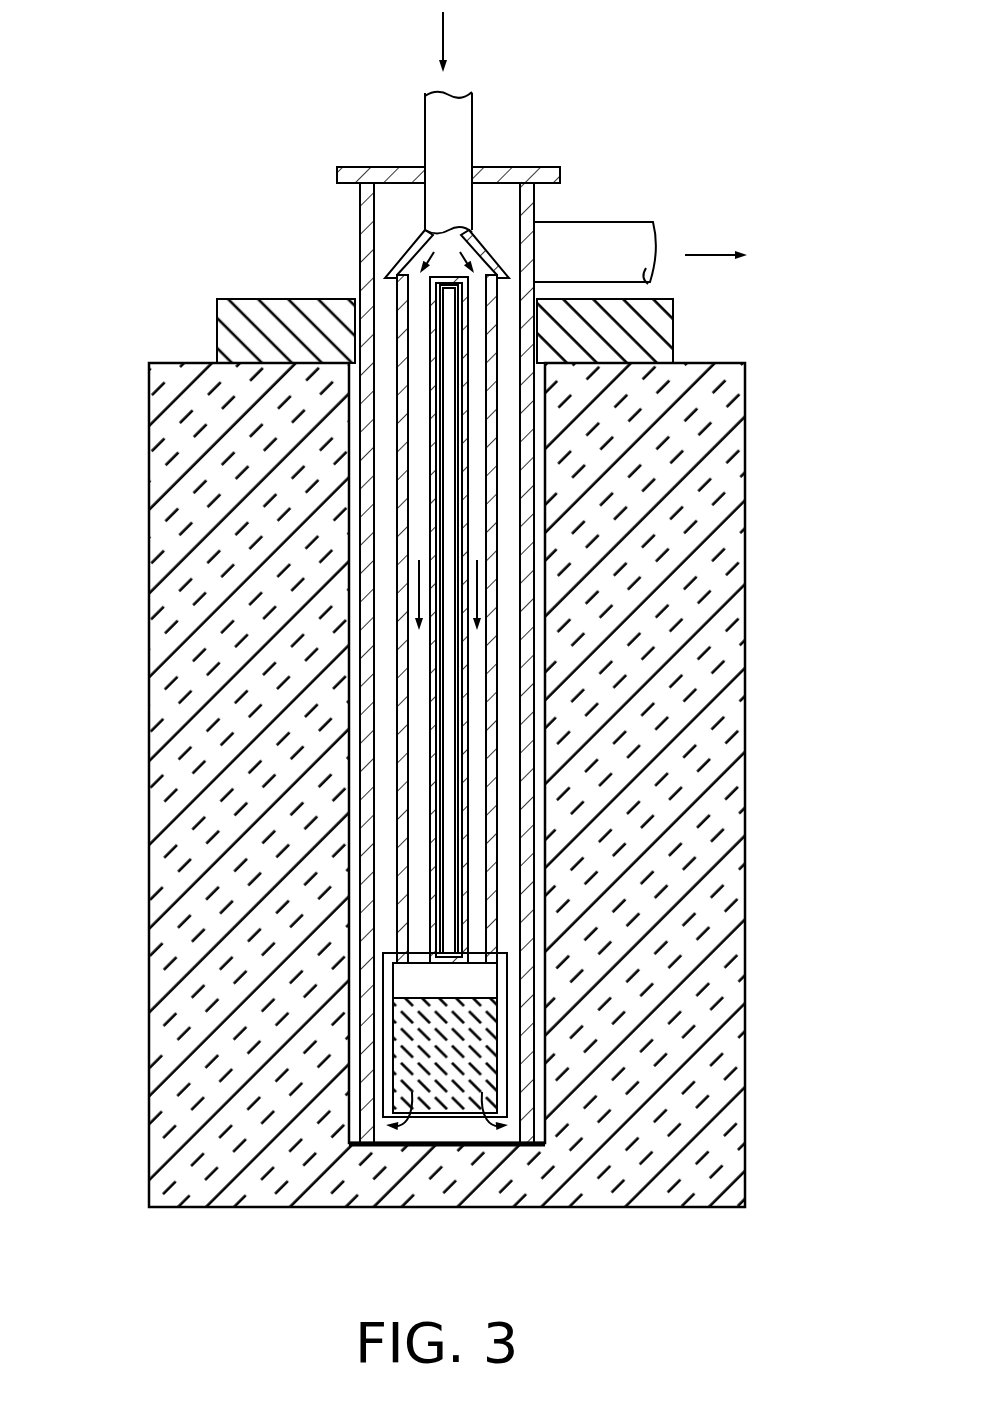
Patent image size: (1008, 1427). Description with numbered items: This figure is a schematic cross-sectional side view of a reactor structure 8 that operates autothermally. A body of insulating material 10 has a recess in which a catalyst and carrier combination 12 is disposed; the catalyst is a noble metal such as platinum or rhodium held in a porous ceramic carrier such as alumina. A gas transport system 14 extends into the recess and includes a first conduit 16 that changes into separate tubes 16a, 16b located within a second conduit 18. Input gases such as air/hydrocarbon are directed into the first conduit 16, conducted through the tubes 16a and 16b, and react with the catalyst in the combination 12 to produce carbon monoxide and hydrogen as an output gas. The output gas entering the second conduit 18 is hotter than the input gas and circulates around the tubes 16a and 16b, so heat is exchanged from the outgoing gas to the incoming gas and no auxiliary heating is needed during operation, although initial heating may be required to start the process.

The reactor structure 8 is at (514, 169).
The body of insulating material 10 is at (160, 490).
The catalyst and carrier combination 12 is at (470, 1115).
The gas transport system 14 is at (415, 663).
The first conduit 16 is at (472, 148).
The tube 16a is at (413, 330).
The tube 16b is at (477, 300).
The second conduit 18 is at (632, 233).